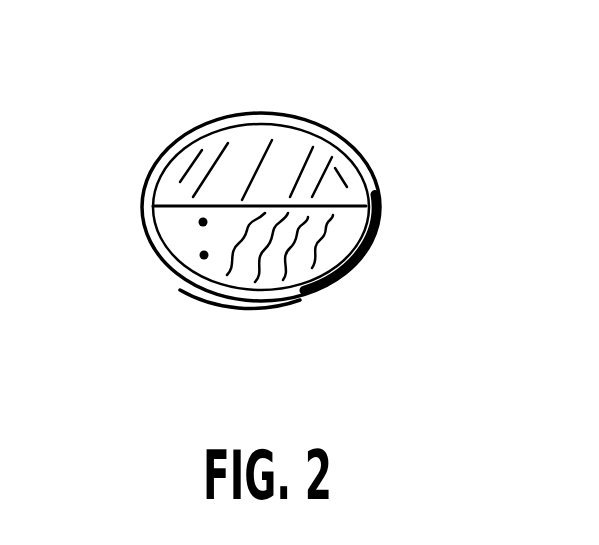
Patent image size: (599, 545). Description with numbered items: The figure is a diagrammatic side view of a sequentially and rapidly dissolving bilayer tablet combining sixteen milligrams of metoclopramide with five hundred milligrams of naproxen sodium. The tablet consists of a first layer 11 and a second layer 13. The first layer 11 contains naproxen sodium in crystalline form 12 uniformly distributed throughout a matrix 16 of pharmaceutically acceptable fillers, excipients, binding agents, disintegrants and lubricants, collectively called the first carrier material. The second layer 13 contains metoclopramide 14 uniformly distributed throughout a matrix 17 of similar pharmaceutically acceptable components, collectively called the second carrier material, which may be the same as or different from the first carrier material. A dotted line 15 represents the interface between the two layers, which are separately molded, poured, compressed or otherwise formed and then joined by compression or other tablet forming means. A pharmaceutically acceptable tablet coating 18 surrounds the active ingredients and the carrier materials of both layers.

The first layer 11 is at (350, 170).
The naproxen sodium in crystalline form 12 is at (287, 162).
The second layer 13 is at (346, 243).
The metoclopramide 14 is at (200, 222).
The dotted line 15 is at (366, 206).
The matrix 16 is at (188, 163).
The matrix 17 is at (289, 266).
The tablet coating 18 is at (238, 301).